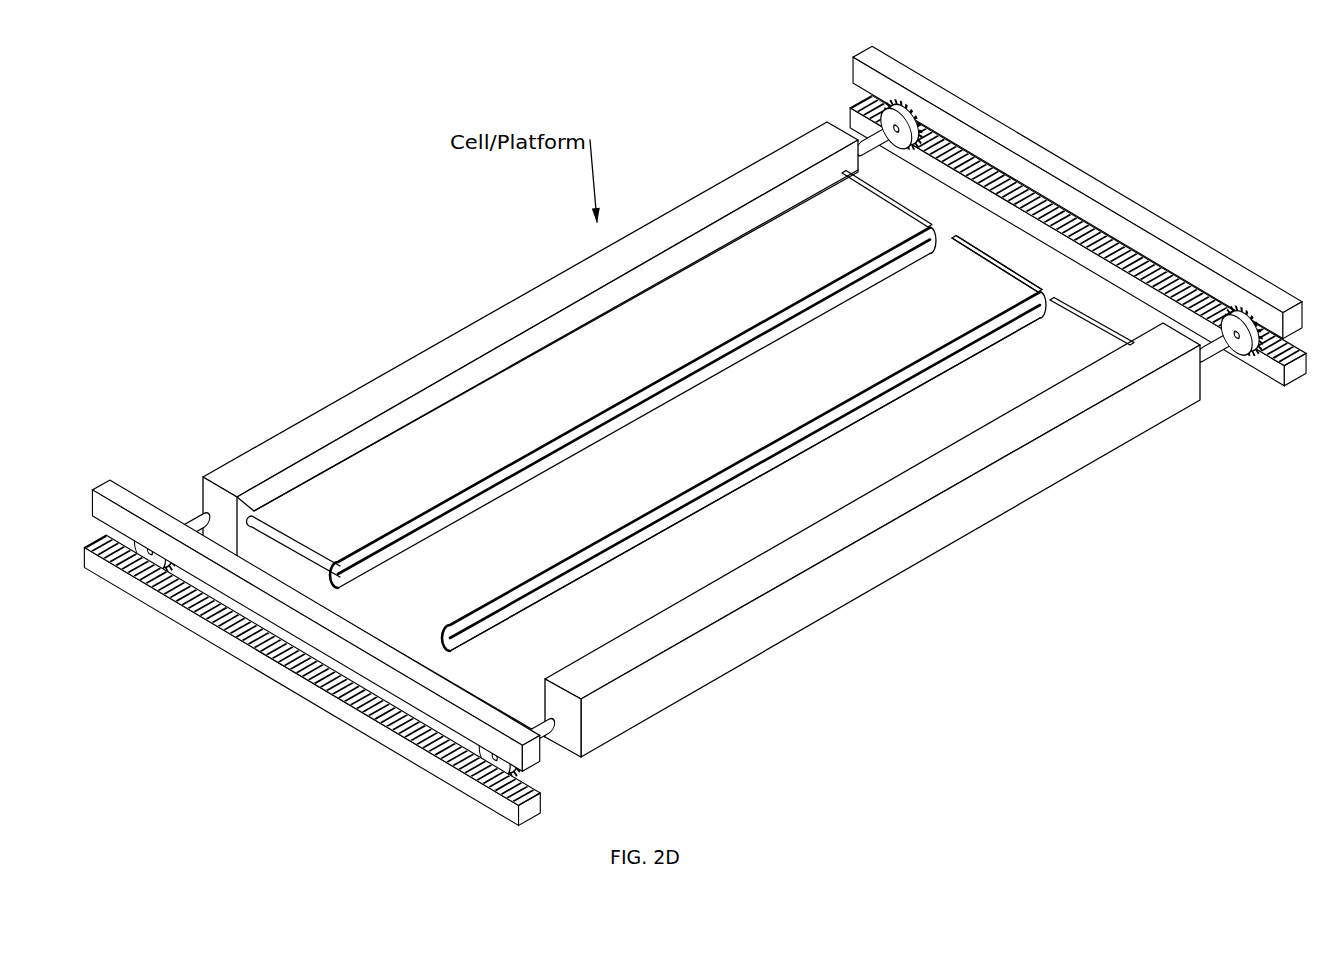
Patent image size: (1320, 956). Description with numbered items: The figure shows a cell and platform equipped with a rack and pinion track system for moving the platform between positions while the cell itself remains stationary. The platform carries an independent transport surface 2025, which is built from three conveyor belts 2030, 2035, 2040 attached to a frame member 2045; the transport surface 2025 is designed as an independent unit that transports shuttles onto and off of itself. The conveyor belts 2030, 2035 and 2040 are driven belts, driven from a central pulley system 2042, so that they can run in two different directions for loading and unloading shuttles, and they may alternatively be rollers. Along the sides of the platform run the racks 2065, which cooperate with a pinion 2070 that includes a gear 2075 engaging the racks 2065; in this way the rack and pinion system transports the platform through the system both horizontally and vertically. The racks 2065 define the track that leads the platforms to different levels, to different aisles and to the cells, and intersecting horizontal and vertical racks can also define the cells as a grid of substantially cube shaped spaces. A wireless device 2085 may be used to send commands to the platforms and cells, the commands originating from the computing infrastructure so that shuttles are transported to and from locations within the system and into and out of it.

The independent transport surface 2025 is at (667, 458).
The conveyor belt 2030 is at (990, 372).
The conveyor belt 2035 is at (873, 318).
The conveyor belt 2040 is at (757, 278).
The central pulley system 2042 is at (355, 577).
The frame member 2045 is at (643, 698).
The rack 2065 is at (357, 713).
The pinion 2070 is at (1246, 362).
The gear 2075 is at (893, 123).
The wireless device 2085 is at (295, 447).